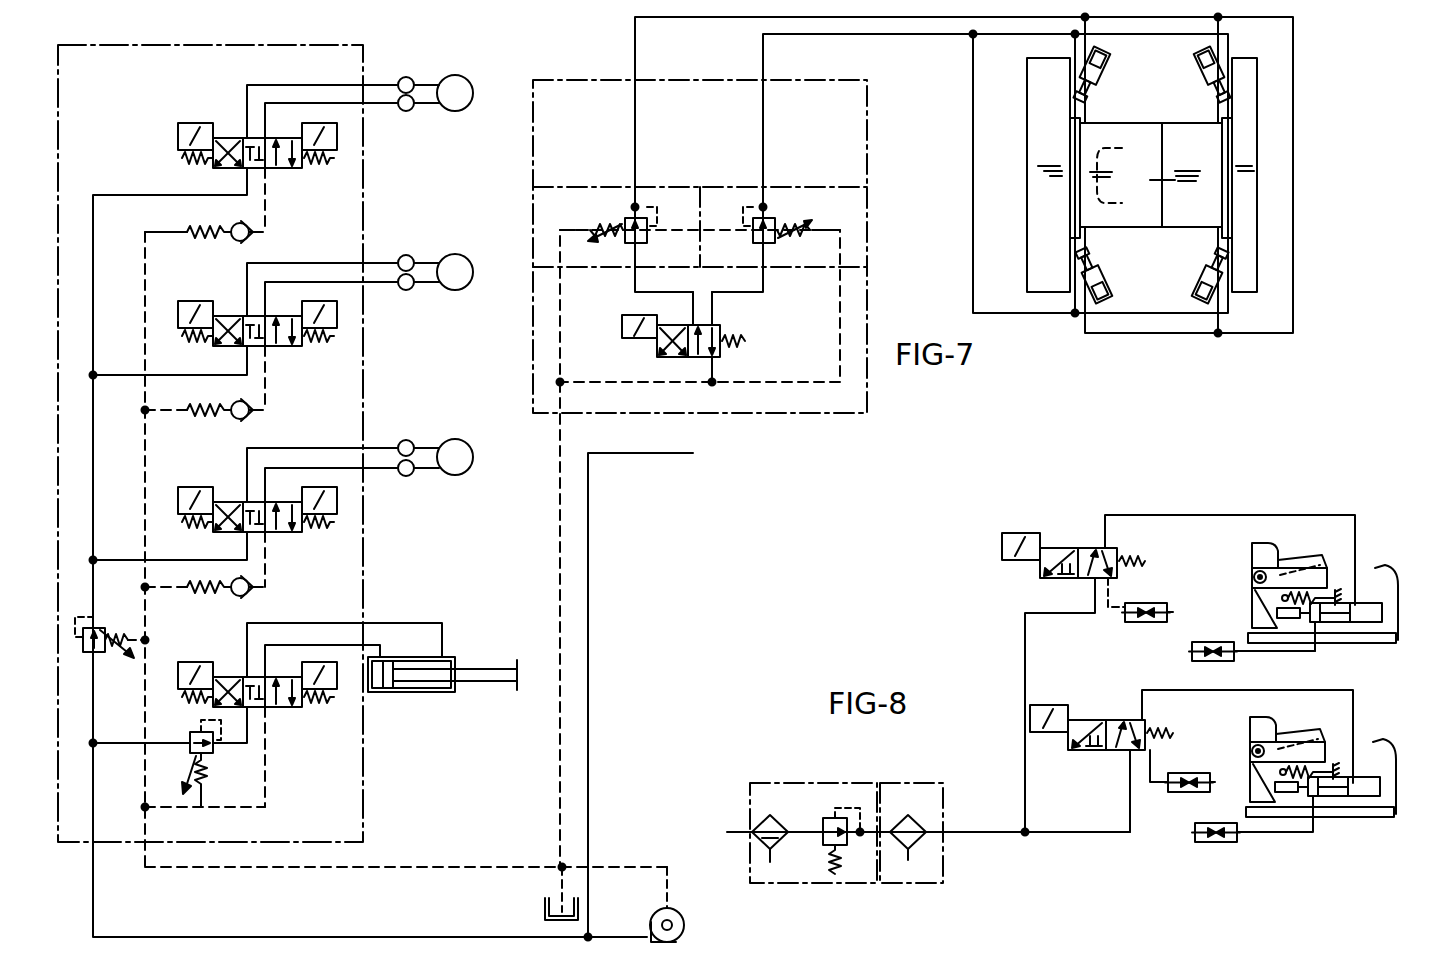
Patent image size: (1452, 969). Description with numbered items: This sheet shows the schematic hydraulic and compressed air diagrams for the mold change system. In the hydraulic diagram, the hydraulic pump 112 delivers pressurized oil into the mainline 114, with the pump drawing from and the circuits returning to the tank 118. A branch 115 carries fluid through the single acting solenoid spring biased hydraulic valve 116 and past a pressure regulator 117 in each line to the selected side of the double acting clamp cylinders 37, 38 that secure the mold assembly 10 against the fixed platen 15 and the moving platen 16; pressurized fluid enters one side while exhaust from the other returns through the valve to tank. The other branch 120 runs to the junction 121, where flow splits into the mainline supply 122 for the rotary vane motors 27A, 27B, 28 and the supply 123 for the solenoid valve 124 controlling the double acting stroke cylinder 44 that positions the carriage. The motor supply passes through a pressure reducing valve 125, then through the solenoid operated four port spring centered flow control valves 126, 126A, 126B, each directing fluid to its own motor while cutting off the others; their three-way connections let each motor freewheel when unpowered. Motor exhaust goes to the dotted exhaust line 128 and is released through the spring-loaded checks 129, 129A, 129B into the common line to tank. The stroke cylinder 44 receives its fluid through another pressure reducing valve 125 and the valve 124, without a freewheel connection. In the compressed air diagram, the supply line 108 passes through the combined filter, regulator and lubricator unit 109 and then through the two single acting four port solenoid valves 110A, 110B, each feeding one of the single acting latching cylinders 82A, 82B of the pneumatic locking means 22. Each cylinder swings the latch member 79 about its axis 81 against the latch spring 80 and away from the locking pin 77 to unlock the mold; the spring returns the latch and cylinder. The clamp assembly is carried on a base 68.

In FIG. 7, the mold assembly 10 is at (1151, 175).
In FIG. 7, the fixed platen 15 is at (1035, 88).
In FIG. 7, the moving platen 16 is at (1250, 95).
In FIG. 8, the pneumatic locking means 22 is at (1258, 535).
In FIG. 8, the rotary vane motor 27A is at (462, 289).
In FIG. 8, the rotary vane motor 27B is at (460, 475).
In FIG. 8, the rotary vane motor 28 is at (462, 110).
In FIG. 7, the mold clamp 37 is at (1192, 72).
In FIG. 7, the mold clamp 38 is at (1190, 274).
In FIG. 8, the double acting stroke cylinder 44 is at (428, 692).
In FIG. 8, the clamp base 68 is at (1372, 642).
In FIG. 8, the locking pin 77 is at (1282, 560).
In FIG. 8, the latch member 79 is at (1300, 560).
In FIG. 8, the latch spring 80 is at (1312, 598).
In FIG. 8, the axis 81 is at (1255, 572).
In FIG. 8, the pneumatic cylinder 82A is at (1372, 778).
In FIG. 8, the pneumatic cylinder 82B is at (1372, 604).
In FIG. 8, the supply line 108 is at (734, 830).
In FIG. 8, the air filter, pressure regulator and lubricator unit 109 is at (840, 782).
In FIG. 8, the single acting four port solenoid valve 110A is at (1086, 722).
In FIG. 8, the single acting four port solenoid valve 110B is at (1060, 548).
In FIG. 8, the hydraulic pump 112 is at (685, 918).
In FIG. 8, the mainline 114 is at (624, 934).
In FIG. 7, the branch 115 is at (888, 38).
In FIG. 8, the branch 115 is at (590, 712).
In FIG. 7, the single acting solenoid spring biased hydraulic valve 116 is at (720, 325).
In FIG. 7, the pressure regulator 117 is at (626, 223).
In FIG. 8, the tank 118 is at (545, 906).
In FIG. 8, the branch 120 is at (365, 935).
In FIG. 8, the junction 121 is at (93, 746).
In FIG. 8, the mainline supply 122 is at (93, 717).
In FIG. 8, the supply 123 is at (163, 740).
In FIG. 8, the solenoid valve 124 is at (284, 707).
In FIG. 8, the pressure reducing valve 125 is at (108, 630).
In FIG. 8, the solenoid operated four port spring centered hydraulic flow control valve 126 is at (284, 168).
In FIG. 8, the solenoid operated four port spring centered hydraulic flow control valve 126A is at (284, 346).
In FIG. 8, the solenoid operated four port spring centered hydraulic flow control valve 126B is at (284, 532).
In FIG. 8, the exhaust line 128 is at (268, 202).
In FIG. 8, the spring-loaded check 129 is at (230, 243).
In FIG. 8, the spring-loaded check 129A is at (236, 422).
In FIG. 8, the spring-loaded check 129B is at (234, 598).